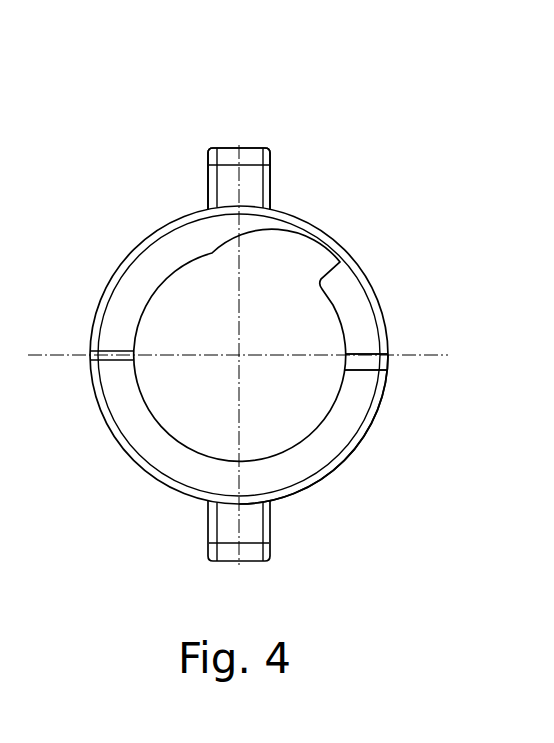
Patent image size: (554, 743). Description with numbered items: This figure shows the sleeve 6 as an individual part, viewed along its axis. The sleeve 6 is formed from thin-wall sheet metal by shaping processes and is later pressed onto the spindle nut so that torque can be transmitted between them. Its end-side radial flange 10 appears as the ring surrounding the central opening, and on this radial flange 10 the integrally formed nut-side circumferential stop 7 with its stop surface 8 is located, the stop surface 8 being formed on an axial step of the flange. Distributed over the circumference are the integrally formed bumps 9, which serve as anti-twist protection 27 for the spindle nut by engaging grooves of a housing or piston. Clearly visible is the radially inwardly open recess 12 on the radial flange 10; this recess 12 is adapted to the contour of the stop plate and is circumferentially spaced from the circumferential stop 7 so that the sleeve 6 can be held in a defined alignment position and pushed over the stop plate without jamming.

The sleeve 6 is at (158, 228).
The nut-side circumferential stop 7 is at (367, 362).
The stop surface 8 is at (366, 362).
The bumps 9 is at (252, 185).
The anti-twist protection 27 is at (239, 179).
The radial flange 10 is at (342, 428).
The recess 12 is at (307, 255).